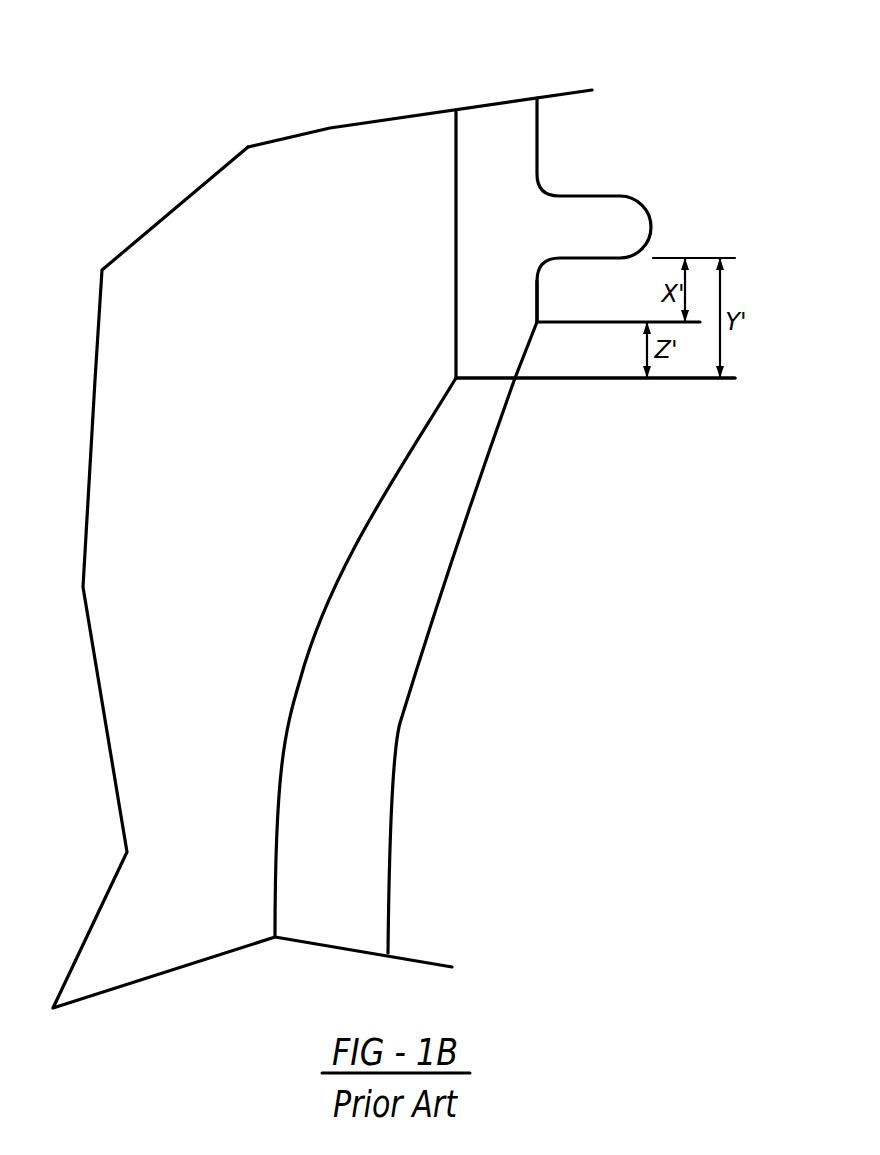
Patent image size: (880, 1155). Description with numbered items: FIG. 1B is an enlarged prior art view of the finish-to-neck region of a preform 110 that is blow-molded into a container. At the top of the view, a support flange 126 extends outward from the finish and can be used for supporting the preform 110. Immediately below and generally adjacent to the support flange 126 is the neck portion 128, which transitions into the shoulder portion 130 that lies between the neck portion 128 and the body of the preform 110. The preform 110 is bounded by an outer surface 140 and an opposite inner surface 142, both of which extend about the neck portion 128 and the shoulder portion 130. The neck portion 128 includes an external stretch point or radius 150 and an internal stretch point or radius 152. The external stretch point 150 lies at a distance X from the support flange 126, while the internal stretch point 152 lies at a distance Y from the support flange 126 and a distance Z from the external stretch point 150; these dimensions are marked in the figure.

The preform 110 is at (398, 84).
The support flange 126 is at (647, 213).
The neck portion 128 is at (493, 317).
The shoulder portion 130 is at (406, 637).
The outer surface 140 is at (400, 726).
The inner surface 142 is at (287, 712).
The external stretch point 150 is at (537, 320).
The internal stretch point 152 is at (445, 377).